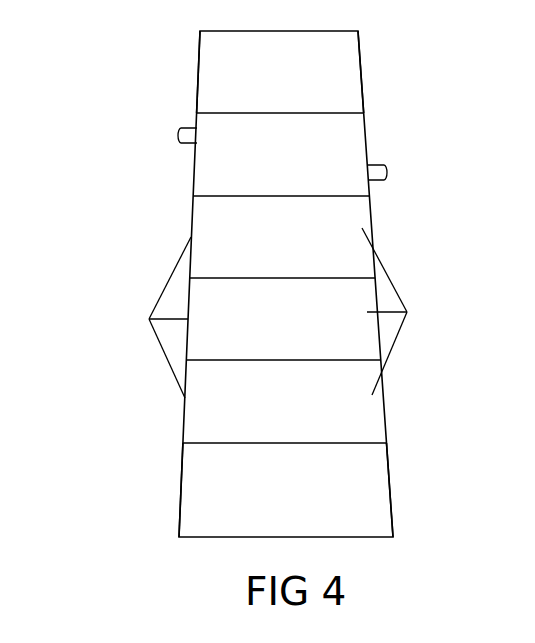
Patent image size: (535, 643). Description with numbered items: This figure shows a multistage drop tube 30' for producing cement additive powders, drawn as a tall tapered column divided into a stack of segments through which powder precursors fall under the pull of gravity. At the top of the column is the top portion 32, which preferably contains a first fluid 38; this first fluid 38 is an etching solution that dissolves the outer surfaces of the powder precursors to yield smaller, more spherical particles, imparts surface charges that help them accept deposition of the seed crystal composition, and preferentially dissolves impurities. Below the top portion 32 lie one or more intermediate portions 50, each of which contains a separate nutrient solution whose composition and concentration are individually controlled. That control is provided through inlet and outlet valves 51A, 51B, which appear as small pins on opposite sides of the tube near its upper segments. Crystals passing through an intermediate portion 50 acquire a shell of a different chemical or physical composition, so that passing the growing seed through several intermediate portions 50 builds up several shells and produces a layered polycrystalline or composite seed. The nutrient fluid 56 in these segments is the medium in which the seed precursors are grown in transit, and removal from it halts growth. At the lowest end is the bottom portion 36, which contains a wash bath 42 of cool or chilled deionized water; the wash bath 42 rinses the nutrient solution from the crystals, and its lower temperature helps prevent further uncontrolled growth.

The drop tube 30' is at (216, 284).
The top portion 32 is at (198, 69).
The first fluid 38 is at (352, 68).
The bottom portion 36 is at (182, 486).
The wash bath 42 is at (377, 489).
The inlet valve 51A is at (177, 135).
The outlet valve 51B is at (389, 172).
The intermediate portion 50 is at (158, 317).
The nutrient fluid 56 is at (400, 311).